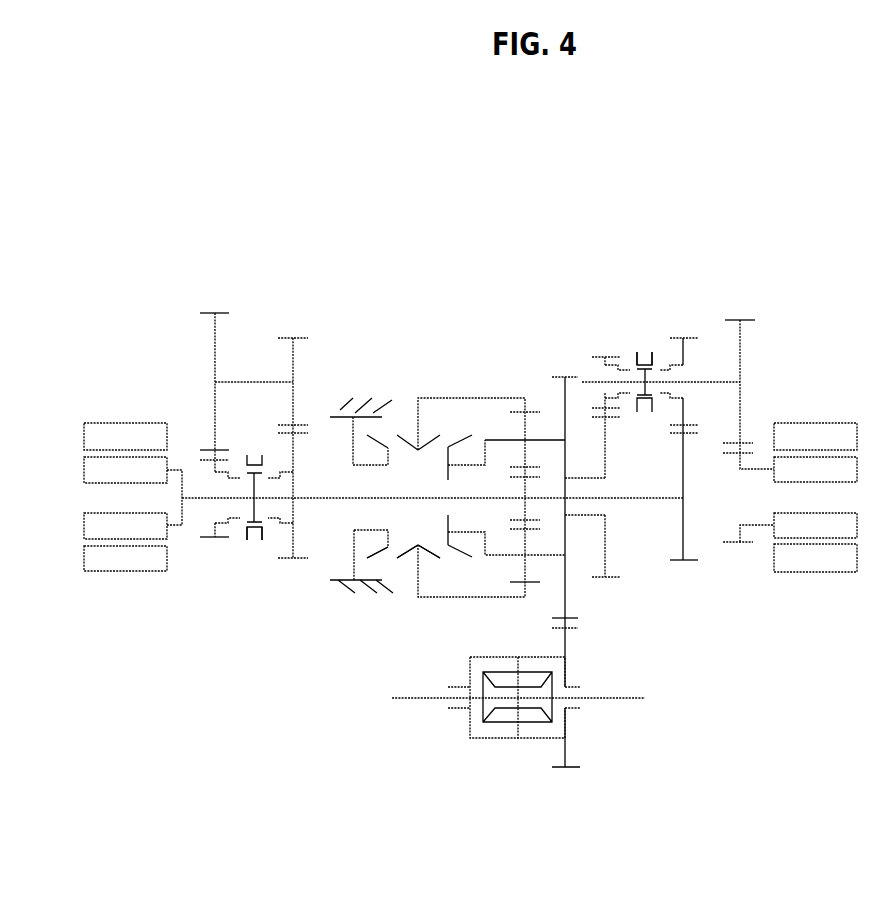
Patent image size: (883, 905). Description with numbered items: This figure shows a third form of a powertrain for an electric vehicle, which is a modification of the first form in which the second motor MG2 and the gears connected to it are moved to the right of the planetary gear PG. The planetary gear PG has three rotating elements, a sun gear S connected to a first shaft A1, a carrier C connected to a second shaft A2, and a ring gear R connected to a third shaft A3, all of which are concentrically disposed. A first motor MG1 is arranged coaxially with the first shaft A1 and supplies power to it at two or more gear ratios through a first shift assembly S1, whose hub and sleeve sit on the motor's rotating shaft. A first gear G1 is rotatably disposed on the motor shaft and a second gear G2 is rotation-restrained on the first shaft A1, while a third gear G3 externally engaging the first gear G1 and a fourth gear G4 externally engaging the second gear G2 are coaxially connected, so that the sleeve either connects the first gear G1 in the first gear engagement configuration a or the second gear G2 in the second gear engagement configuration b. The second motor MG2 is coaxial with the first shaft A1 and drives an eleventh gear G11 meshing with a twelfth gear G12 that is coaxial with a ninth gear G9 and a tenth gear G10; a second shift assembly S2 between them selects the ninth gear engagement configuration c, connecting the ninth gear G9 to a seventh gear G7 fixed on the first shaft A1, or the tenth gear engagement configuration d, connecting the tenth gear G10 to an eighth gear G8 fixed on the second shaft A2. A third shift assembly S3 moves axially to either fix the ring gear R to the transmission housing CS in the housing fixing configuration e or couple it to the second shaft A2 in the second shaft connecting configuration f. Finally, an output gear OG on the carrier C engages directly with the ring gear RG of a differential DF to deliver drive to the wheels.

The first motor MG1 is at (133, 488).
The second motor MG2 is at (815, 488).
The first gear G1 is at (212, 539).
The second gear G2 is at (296, 560).
The third gear G3 is at (215, 313).
The fourth gear G4 is at (293, 338).
The seventh gear G7 is at (688, 562).
The eighth gear G8 is at (612, 578).
The ninth gear G9 is at (688, 338).
The tenth gear G10 is at (604, 357).
The eleventh gear G11 is at (735, 544).
The twelfth gear G12 is at (745, 320).
The first shift assembly S1 is at (254, 545).
The second shift assembly S2 is at (645, 350).
The third shift assembly S3 is at (406, 560).
The first gear engagement configuration a is at (246, 543).
The second gear engagement configuration b is at (262, 543).
The ninth gear engagement configuration c is at (657, 351).
The tenth gear engagement configuration d is at (633, 351).
The housing fixing configuration e is at (384, 559).
The second shaft connecting configuration f is at (458, 560).
The transmission housing CS is at (372, 408).
The first shaft A1 is at (640, 500).
The second shaft A2 is at (548, 557).
The third shaft A3 is at (483, 398).
The planetary gear PG is at (524, 394).
The ring gear R is at (535, 412).
The carrier C is at (547, 440).
The sun gear S is at (522, 520).
The output gear OG is at (576, 629).
The differential DF is at (517, 741).
The ring gear of differential RG is at (572, 768).